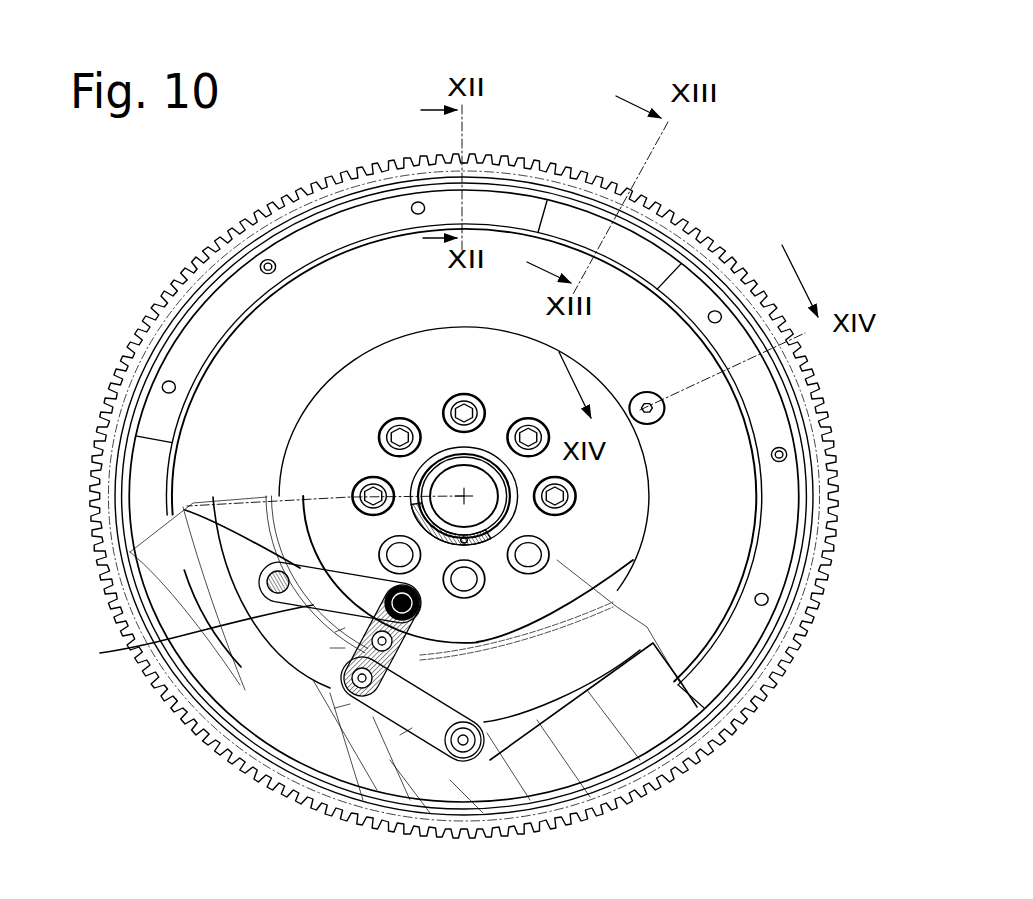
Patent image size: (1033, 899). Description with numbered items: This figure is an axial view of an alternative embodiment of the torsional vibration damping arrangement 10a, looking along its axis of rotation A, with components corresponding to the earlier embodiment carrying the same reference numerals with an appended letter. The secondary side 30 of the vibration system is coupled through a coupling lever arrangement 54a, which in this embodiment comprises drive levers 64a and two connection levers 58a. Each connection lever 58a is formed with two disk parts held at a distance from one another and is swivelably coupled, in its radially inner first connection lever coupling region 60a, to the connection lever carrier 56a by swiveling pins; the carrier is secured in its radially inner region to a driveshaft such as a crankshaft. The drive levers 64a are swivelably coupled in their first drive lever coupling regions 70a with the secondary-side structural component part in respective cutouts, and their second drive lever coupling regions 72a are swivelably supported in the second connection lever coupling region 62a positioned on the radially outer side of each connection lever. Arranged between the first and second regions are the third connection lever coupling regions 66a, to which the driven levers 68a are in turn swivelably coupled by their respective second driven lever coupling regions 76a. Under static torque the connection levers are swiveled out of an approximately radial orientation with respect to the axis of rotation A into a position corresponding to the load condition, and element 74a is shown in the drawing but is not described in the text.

The torsional vibration damping arrangement 10a is at (763, 101).
The secondary side 30 is at (633, 737).
The coupling lever arrangement 54a is at (400, 735).
The connection lever carrier 56a is at (537, 585).
The connection lever 58a is at (329, 705).
The first connection lever coupling region 60a is at (185, 510).
The second connection lever coupling region 62a is at (334, 702).
The drive lever 64a is at (427, 727).
The third connection lever coupling region 66a is at (421, 650).
The driven lever 68a is at (322, 643).
The first drive lever coupling region 70a is at (484, 725).
The second drive lever coupling region 72a is at (385, 697).
The lever arm with pin 74a is at (262, 578).
The second driven lever coupling region 76a is at (335, 632).
The axis of rotation A is at (470, 495).